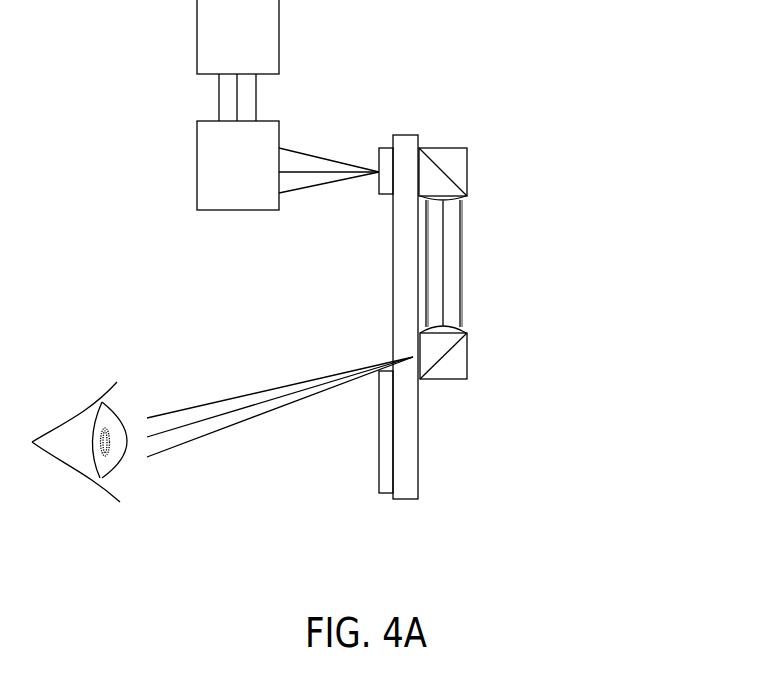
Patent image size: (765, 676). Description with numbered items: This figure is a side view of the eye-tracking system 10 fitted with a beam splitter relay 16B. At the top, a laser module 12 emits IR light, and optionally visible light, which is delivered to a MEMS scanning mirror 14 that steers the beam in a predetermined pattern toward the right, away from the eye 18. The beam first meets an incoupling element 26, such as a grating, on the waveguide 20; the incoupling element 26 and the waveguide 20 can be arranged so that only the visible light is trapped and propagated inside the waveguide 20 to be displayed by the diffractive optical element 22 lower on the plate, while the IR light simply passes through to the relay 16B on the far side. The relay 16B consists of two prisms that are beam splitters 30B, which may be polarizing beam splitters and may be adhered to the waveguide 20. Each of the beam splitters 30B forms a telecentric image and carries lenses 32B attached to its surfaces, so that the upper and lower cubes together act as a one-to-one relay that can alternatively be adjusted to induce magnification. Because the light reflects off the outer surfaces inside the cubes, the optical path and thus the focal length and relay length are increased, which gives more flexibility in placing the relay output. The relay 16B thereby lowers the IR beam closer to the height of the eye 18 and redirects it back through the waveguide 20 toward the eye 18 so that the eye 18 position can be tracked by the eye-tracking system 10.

The eye-tracking system 10 is at (112, 209).
The laser module 12 is at (228, 53).
The MEMS scanning mirror 14 is at (228, 187).
The beam splitter relay 16B is at (525, 265).
The eye 18 is at (73, 467).
The waveguide 20 is at (408, 134).
The diffractive optical element 22 is at (385, 493).
The incoupling element 26 is at (381, 147).
The beam splitters 30B is at (445, 148).
The lenses 32B is at (467, 196).